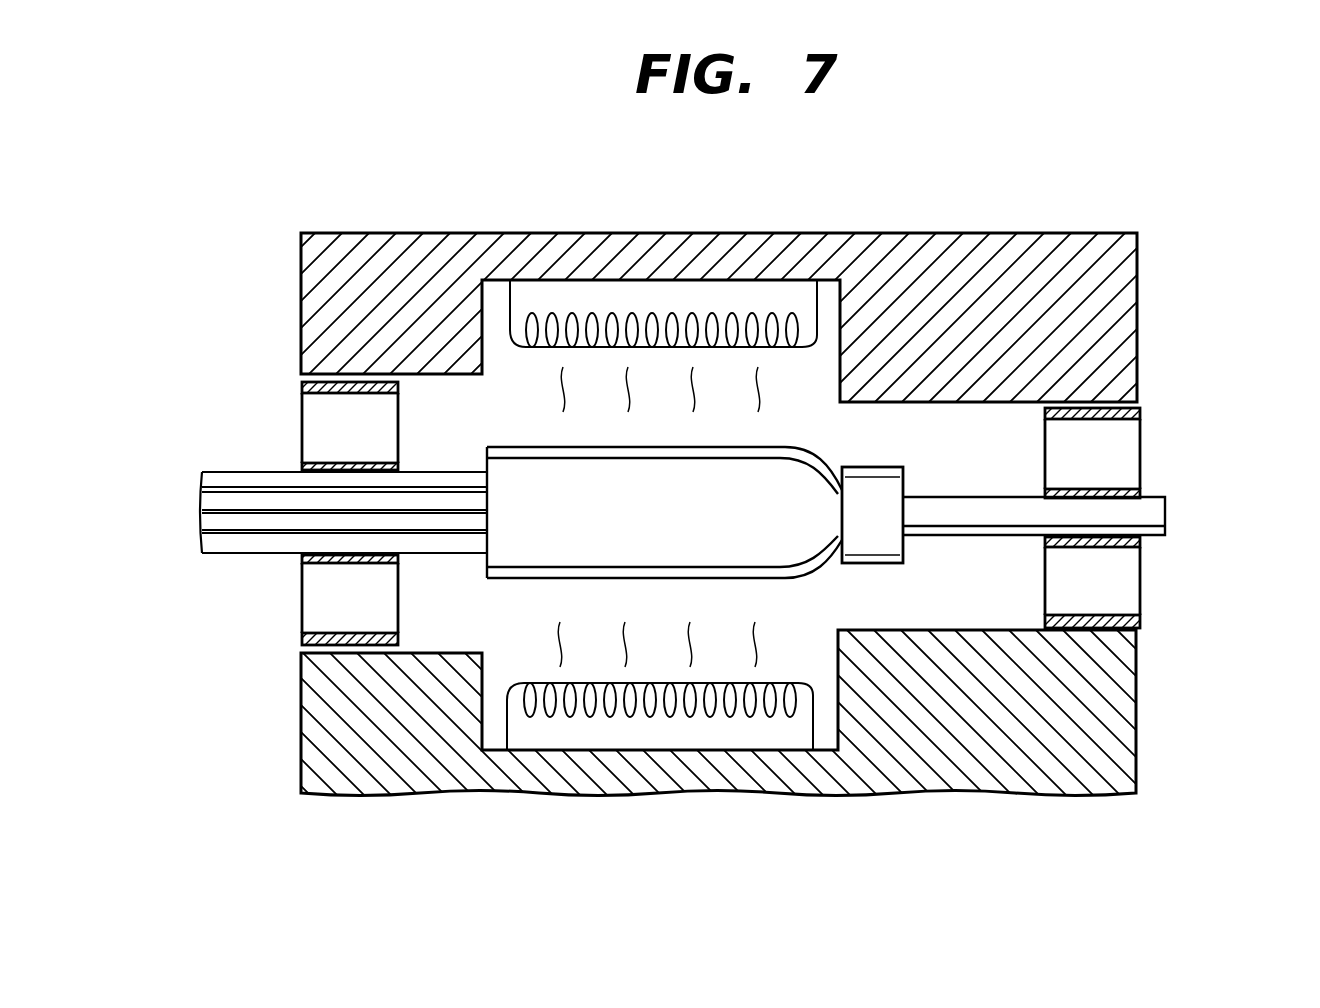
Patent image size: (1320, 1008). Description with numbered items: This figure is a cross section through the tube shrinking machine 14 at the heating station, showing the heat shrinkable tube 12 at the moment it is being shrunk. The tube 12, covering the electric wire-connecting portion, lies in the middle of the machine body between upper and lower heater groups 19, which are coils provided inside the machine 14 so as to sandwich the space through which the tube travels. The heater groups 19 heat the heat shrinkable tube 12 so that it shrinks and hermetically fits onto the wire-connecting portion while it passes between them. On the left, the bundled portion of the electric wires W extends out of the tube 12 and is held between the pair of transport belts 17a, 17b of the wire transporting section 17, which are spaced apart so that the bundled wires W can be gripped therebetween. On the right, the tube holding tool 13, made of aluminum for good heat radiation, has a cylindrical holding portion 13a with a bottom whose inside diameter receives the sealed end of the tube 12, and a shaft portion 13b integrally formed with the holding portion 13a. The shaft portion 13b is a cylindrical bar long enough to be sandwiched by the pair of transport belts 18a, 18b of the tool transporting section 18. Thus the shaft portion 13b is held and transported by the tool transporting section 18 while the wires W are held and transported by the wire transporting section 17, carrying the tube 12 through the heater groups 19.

The heat shrinkable tube 12 is at (597, 465).
The tube holding tool 13 is at (1003, 692).
The holding portion 13a is at (871, 547).
The shaft portion 13b is at (975, 525).
The tube shrinking machine 14 is at (1080, 237).
The wire transporting section 17 is at (267, 490).
The transport belt 17a is at (322, 410).
The transport belt 17b is at (362, 633).
The tool transporting section 18 is at (1181, 518).
The transport belt 18a is at (1105, 420).
The transport belt 18b is at (1100, 615).
The heater groups 19 is at (690, 307).
The electric wires W is at (257, 543).